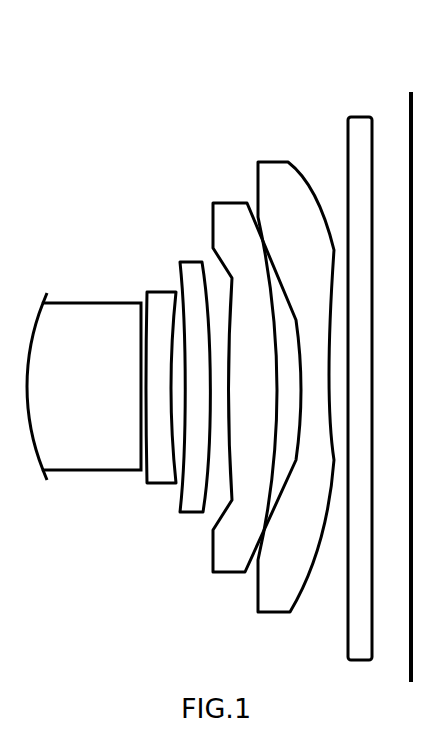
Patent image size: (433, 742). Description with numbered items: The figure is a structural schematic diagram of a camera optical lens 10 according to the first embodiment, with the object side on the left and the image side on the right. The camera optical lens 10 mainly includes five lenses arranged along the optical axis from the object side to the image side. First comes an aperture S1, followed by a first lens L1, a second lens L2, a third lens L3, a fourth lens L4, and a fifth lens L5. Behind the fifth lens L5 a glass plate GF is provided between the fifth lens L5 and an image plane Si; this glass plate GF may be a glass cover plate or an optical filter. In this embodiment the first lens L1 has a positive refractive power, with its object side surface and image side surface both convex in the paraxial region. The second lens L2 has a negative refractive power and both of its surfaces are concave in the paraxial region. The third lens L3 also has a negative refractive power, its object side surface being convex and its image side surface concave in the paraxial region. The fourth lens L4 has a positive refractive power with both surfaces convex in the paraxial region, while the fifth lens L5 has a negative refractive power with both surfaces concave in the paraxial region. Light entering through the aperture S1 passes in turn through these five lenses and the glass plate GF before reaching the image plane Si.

The camera optical lens 10 is at (216, 354).
The aperture S1 is at (34, 377).
The first lens L1 is at (84, 374).
The second lens L2 is at (160, 376).
The third lens L3 is at (193, 378).
The fourth lens L4 is at (257, 377).
The fifth lens L5 is at (296, 375).
The glass plate GF is at (358, 377).
The image plane Si is at (404, 375).